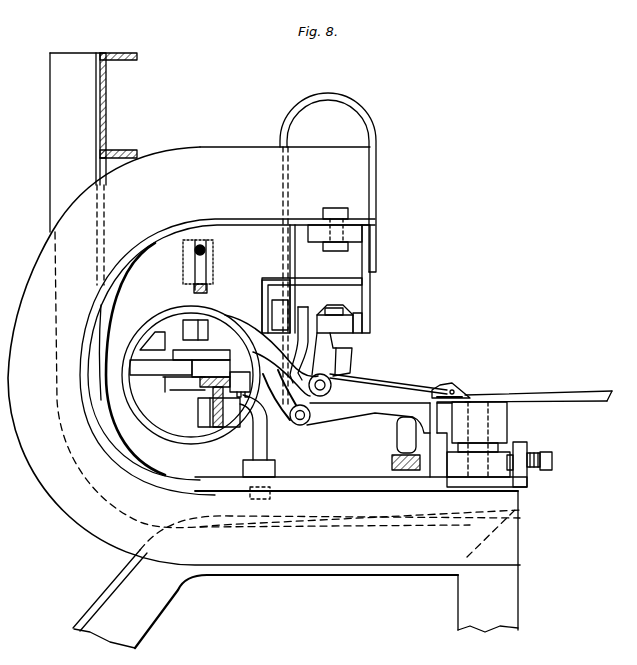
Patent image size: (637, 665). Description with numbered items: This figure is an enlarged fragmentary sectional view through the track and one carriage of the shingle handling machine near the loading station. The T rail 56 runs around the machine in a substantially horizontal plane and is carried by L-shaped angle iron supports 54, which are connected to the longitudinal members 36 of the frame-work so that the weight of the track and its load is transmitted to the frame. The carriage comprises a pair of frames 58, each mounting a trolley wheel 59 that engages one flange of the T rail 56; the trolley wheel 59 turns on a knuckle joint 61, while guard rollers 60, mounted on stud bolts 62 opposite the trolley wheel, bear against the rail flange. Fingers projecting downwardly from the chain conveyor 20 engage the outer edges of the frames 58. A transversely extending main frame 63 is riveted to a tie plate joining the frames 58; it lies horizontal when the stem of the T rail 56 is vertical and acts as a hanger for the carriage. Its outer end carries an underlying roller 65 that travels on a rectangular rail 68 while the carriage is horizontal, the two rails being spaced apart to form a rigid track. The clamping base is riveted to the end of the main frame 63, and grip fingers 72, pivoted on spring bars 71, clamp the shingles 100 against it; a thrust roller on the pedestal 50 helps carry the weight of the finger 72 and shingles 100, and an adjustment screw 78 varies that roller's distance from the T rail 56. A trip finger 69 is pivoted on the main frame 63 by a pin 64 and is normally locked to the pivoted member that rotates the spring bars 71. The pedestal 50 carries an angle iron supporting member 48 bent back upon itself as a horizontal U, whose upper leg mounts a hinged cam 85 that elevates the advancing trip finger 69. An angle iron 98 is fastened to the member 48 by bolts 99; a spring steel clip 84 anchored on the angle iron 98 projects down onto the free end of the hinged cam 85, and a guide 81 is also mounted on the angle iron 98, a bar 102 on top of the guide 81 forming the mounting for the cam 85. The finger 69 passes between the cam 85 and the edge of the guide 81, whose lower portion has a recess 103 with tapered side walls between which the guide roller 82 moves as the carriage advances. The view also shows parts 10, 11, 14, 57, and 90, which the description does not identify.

The connecting member 10 is at (350, 357).
The guide block 11 is at (500, 420).
The guide 14 is at (470, 397).
The chain conveyor 20 is at (202, 281).
The longitudinal members 36 is at (128, 48).
The angle iron supporting member 48 is at (181, 162).
The pedestal 50 is at (514, 590).
The L-shaped angle iron supports 54 is at (50, 90).
The T rail 56 is at (213, 404).
The support 57 is at (262, 443).
The frames 58 is at (165, 322).
The trolley wheel 59 is at (170, 384).
The guard rollers 60 is at (236, 373).
The knuckle joint 61 is at (178, 366).
The stud bolts 62 is at (245, 392).
The main frame 63 is at (350, 416).
The pin 64 is at (308, 422).
The underlying roller 65 is at (403, 441).
The rectangular rail 68 is at (393, 463).
The trip finger 69 is at (302, 333).
The spring bar 71 is at (384, 383).
The grip fingers 72 is at (447, 386).
The adjustment screw 78 is at (546, 462).
The guide 81 is at (371, 290).
The guide roller 82 is at (362, 325).
The spring steel clip 84 is at (377, 180).
The hinged cam 85 is at (264, 309).
The spring housing 90 is at (213, 247).
The angle iron 98 is at (371, 249).
The bolts 99 is at (332, 210).
The shingles 100 is at (562, 397).
The bar 102 is at (346, 283).
The recess 103 is at (345, 312).